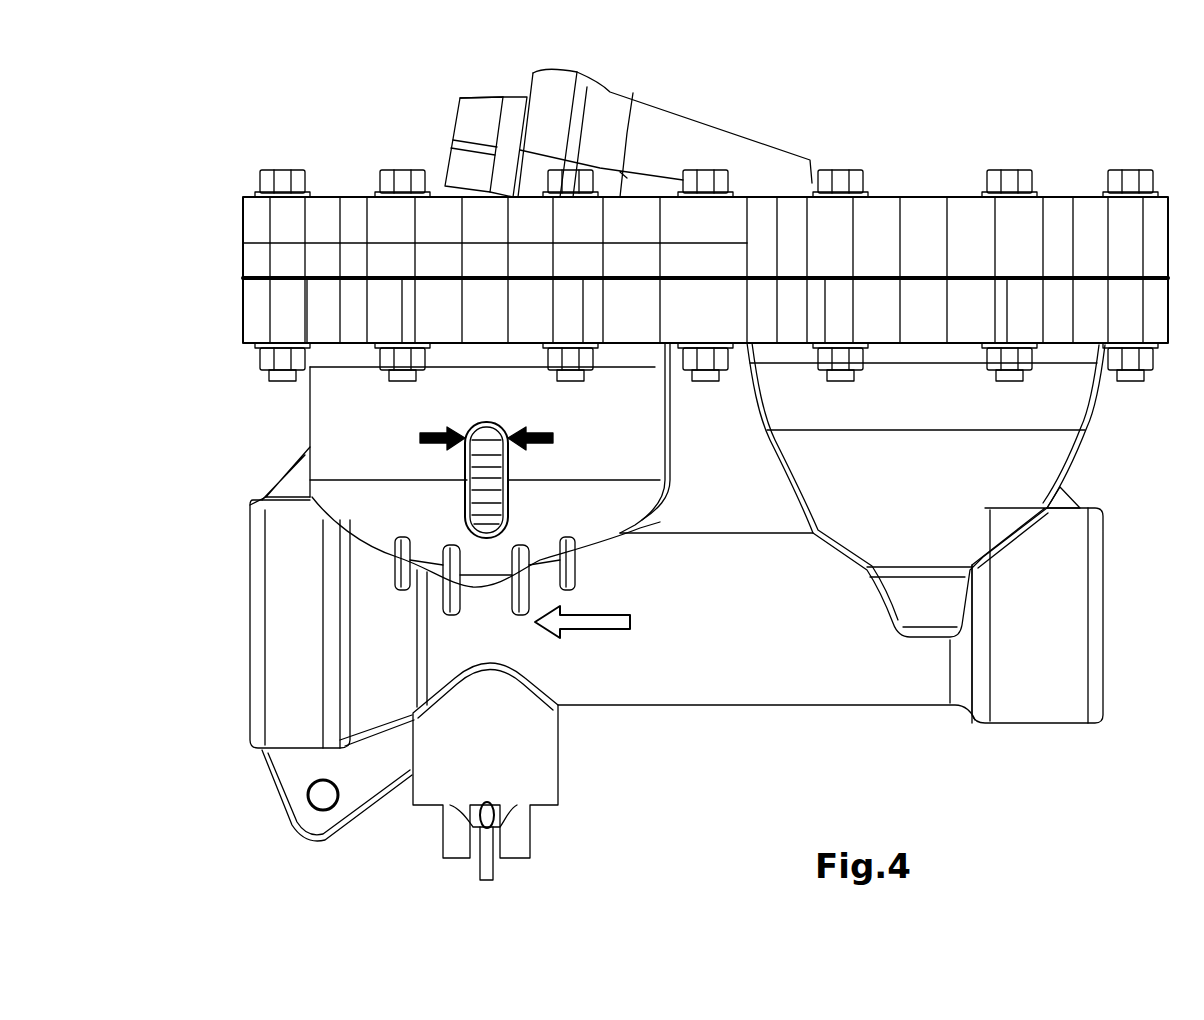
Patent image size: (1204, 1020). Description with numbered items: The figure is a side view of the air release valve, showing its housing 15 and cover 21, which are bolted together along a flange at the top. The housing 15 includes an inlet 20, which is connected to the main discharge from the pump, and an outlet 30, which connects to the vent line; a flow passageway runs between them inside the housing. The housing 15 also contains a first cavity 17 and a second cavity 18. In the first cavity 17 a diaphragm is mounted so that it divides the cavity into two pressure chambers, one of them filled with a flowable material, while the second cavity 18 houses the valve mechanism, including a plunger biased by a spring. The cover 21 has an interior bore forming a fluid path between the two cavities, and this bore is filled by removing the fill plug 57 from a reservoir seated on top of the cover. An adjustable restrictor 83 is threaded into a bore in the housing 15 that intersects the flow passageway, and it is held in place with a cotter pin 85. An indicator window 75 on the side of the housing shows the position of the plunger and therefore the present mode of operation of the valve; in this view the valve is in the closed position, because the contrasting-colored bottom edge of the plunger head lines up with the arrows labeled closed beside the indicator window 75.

The housing 15 is at (783, 705).
The first cavity 17 is at (1025, 455).
The second cavity 18 is at (355, 452).
The inlet 20 is at (1103, 622).
The cover 21 is at (926, 194).
The outlet 30 is at (250, 657).
The fill plug 57 is at (470, 108).
The indicator window 75 is at (465, 480).
The adjustable restrictor 83 is at (452, 840).
The cotter pin 85 is at (498, 812).